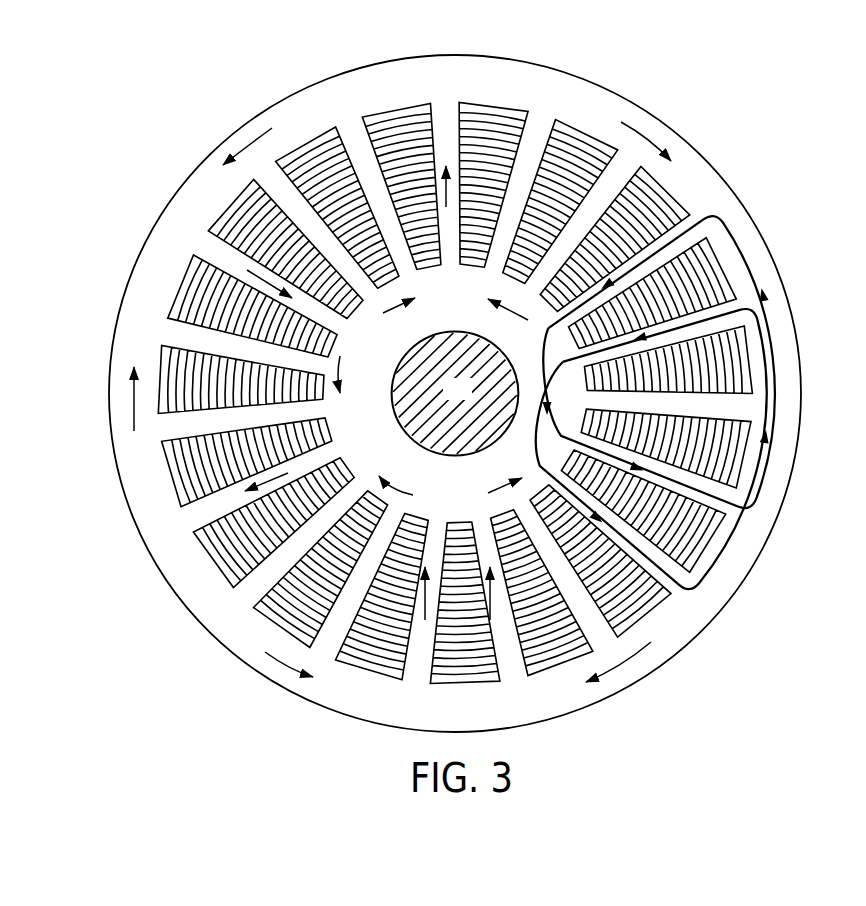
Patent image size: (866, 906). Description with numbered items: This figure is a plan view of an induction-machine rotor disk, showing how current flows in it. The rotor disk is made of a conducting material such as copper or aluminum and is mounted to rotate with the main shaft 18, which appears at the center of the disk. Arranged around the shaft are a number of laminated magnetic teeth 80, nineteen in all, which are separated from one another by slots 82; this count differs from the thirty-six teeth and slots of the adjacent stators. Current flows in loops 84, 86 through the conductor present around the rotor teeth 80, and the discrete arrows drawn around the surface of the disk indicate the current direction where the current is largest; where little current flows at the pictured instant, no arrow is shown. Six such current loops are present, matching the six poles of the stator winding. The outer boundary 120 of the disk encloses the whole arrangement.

The main shaft 18 is at (470, 401).
The magnetic teeth 80 is at (250, 165).
The slots 82 is at (445, 115).
The current loop 84 is at (772, 321).
The current loop 86 is at (736, 525).
The stator core 120 is at (186, 170).